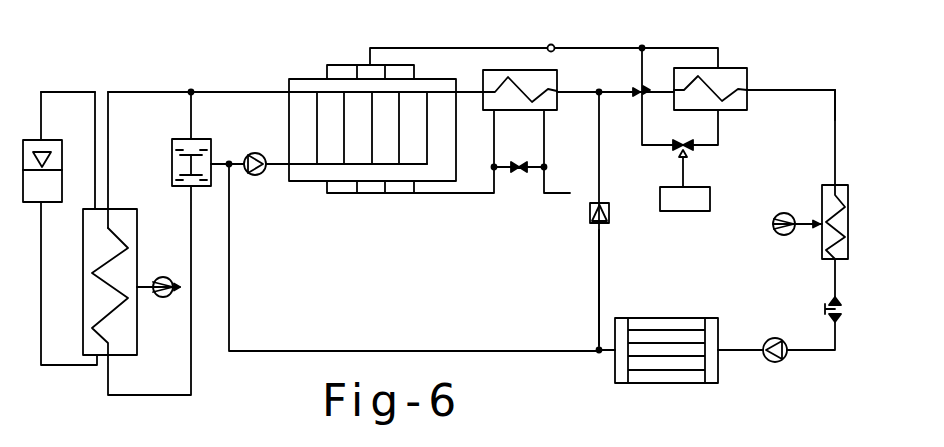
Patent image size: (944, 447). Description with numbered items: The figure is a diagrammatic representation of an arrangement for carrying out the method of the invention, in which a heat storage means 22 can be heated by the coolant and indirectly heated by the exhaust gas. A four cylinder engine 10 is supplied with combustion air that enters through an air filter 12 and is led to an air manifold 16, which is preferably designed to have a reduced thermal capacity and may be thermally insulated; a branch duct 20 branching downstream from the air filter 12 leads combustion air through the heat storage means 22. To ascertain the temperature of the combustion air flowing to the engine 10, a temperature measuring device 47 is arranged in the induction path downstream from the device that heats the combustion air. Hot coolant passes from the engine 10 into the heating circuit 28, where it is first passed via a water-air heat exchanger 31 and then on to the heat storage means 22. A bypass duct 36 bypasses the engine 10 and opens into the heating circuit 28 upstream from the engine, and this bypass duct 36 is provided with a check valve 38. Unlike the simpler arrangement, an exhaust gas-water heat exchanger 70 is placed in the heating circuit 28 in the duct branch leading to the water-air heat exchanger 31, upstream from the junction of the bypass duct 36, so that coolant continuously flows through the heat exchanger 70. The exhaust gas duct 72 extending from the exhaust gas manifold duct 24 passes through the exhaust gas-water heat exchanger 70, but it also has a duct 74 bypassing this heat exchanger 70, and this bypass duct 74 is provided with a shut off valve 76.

The four cylinder engine 10 is at (303, 170).
The air filter 12 is at (685, 205).
The air manifold 16 is at (340, 65).
The branch duct 20 is at (705, 148).
The heat storage means 22 is at (664, 318).
The exhaust gas manifold duct 24 is at (400, 195).
The heating circuit 28 is at (772, 88).
The water-air heat exchanger 31 is at (733, 100).
The bypass duct 36 is at (599, 295).
The check valve 38 is at (590, 212).
The temperature measuring device 47 is at (554, 44).
The exhaust gas-water heat exchanger 70 is at (548, 103).
The exhaust gas duct 72 is at (494, 178).
The bypass duct 74 is at (535, 172).
The shut off valve 76 is at (518, 161).